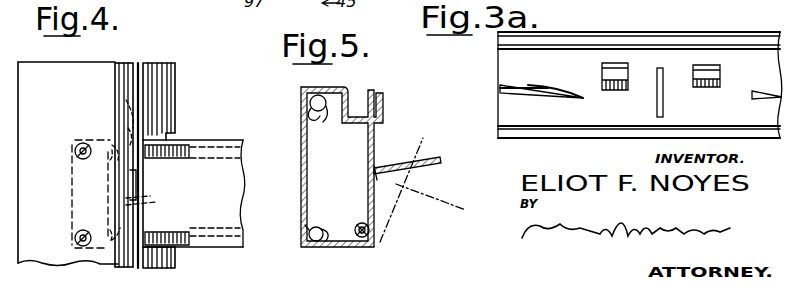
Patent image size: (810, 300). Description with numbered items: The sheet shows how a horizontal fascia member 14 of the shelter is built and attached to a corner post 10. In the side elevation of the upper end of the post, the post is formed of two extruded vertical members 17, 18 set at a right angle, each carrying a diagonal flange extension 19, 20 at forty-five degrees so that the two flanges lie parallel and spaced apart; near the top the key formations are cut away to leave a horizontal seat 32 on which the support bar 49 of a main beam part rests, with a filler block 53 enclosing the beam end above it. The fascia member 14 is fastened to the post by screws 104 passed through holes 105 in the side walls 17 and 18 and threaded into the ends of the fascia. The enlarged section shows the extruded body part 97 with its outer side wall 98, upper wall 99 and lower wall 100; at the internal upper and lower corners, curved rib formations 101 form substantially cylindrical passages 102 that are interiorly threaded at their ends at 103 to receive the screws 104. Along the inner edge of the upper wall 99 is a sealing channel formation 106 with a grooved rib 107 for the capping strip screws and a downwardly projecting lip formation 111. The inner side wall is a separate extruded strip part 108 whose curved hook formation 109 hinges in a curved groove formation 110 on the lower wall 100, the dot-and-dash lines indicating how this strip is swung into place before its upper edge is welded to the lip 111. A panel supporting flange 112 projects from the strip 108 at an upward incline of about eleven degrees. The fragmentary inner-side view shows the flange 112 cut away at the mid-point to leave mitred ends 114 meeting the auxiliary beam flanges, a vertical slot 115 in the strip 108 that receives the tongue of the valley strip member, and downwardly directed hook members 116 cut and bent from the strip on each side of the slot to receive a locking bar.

In FIG. 4, the corner post 10 is at (182, 100).
In FIG. 4, the fascia member 14 is at (232, 139).
In FIG. 4, the extruded vertical member 17 is at (83, 68).
In FIG. 4, the extruded vertical member 18 is at (139, 66).
In FIG. 4, the flange extension 19 is at (128, 66).
In FIG. 4, the flange extension 20 is at (171, 66).
In FIG. 4, the horizontal seat 32 is at (118, 223).
In FIG. 4, the support bar 49 is at (128, 217).
In FIG. 4, the filler block 53 is at (130, 187).
In FIG. 4, the extruded body part 97 is at (247, 194).
In FIG. 5, the extruded body part 97 is at (290, 108).
In FIG. 5, the outer side wall 98 is at (303, 155).
In FIG. 5, the upper wall 99 is at (334, 94).
In FIG. 5, the lower wall 100 is at (338, 247).
In FIG. 5, the longitudinal rib formation 101 is at (328, 113).
In FIG. 4, the cylindrical passage 102 is at (219, 130).
In FIG. 5, the cylindrical passage 102 is at (306, 107).
In FIG. 4, the interior thread 103 is at (182, 141).
In FIG. 4, the fastening screw 104 is at (110, 129).
In FIG. 4, the hole 105 is at (126, 110).
In FIG. 5, the sealing channel formation 106 is at (360, 107).
In FIG. 5, the grooved rib 107 is at (384, 104).
In FIG. 3A, the grooved rib 107 is at (573, 43).
In FIG. 5, the extruded strip part 108 is at (375, 200).
In FIG. 3A, the extruded strip part 108 is at (503, 118).
In FIG. 5, the curved hook formation 109 is at (361, 223).
In FIG. 5, the curved groove formation 110 is at (358, 246).
In FIG. 5, the longitudinal lip formation 111 is at (367, 132).
In FIG. 5, the panel supporting flange 112 is at (428, 137).
In FIG. 3A, the panel supporting flange 112 is at (517, 92).
In FIG. 3A, the inner mitred end 114 is at (555, 92).
In FIG. 3A, the vertical slot 115 is at (660, 97).
In FIG. 3A, the hook member 116 is at (613, 79).